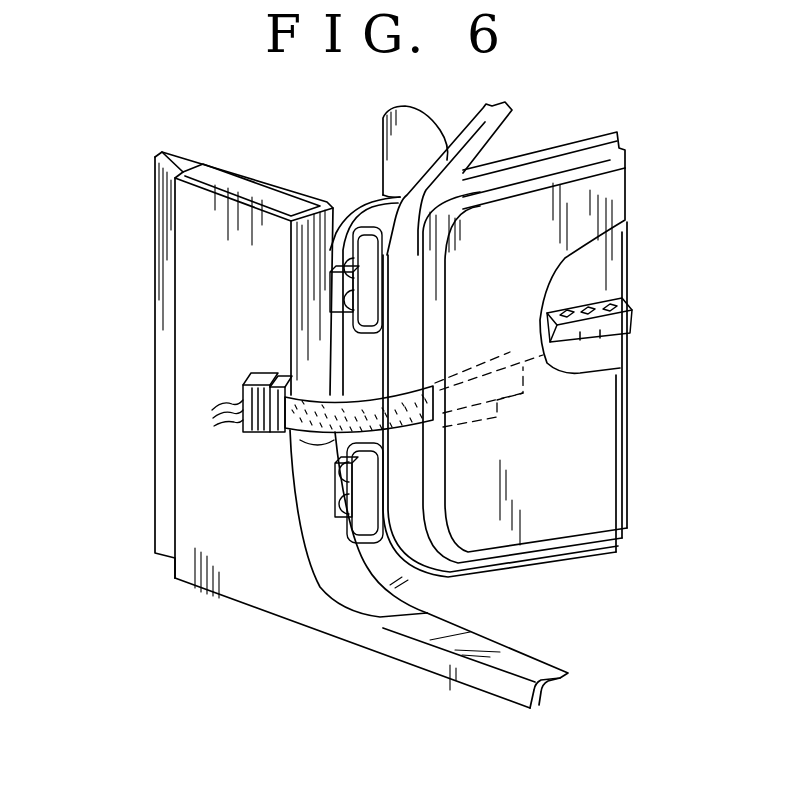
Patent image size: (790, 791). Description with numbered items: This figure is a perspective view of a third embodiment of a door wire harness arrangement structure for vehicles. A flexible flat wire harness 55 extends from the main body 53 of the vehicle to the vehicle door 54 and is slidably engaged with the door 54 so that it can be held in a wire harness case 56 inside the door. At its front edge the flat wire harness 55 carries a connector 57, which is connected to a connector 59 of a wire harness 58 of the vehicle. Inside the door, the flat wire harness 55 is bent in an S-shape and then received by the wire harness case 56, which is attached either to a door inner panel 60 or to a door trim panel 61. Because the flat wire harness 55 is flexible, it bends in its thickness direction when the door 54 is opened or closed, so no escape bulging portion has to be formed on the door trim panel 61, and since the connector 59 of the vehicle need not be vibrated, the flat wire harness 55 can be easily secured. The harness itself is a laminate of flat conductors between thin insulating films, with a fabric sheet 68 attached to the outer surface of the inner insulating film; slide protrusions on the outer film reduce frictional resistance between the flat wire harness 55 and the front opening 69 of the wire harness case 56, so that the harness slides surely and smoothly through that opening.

The main body 53 is at (283, 603).
The vehicle door 54 is at (550, 138).
The flat wire harness 55 is at (538, 382).
The wire harness case 56 is at (497, 420).
The connector 57 is at (268, 436).
The wire harness 58 is at (213, 428).
The connector 59 is at (260, 377).
The door inner panel 60 is at (573, 167).
The door trim panel 61 is at (615, 195).
The fabric sheet 68 is at (317, 450).
The front opening 69 is at (420, 426).